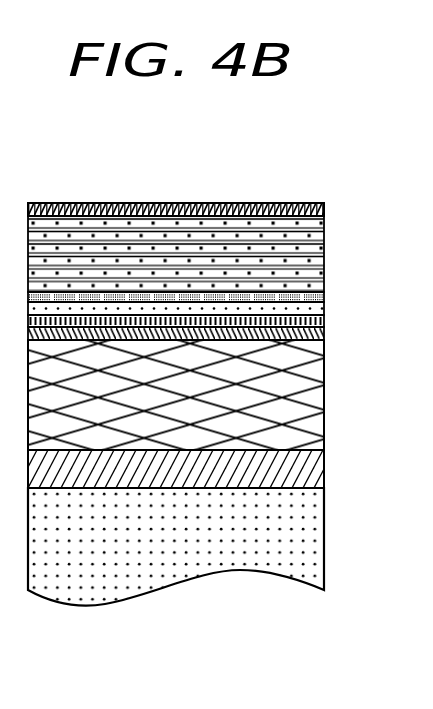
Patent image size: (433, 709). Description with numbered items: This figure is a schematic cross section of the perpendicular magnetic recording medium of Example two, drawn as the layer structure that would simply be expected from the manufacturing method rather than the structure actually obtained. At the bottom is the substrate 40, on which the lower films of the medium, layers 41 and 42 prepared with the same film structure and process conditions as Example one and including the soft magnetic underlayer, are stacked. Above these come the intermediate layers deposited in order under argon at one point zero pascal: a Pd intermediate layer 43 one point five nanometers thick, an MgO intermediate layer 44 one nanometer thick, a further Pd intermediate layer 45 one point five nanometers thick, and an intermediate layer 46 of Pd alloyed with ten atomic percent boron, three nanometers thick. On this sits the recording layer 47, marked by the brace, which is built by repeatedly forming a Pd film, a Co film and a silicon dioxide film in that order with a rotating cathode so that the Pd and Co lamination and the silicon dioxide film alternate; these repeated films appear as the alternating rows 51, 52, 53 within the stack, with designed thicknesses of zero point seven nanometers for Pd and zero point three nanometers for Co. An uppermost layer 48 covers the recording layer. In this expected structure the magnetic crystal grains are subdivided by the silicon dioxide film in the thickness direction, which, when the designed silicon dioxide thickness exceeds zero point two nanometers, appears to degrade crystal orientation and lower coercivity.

The substrate 40 is at (310, 525).
The first layer 41 is at (320, 468).
The second layer 42 is at (310, 427).
The Pd intermediate layer 43 is at (320, 336).
The MgO intermediate layer 44 is at (322, 322).
The Pd intermediate layer 45 is at (322, 307).
The intermediate layer 46 is at (322, 298).
The multilayer stack 47 is at (329, 220).
The top layer 48 is at (325, 205).
The first sublayer 51 is at (280, 237).
The second sublayer 52 is at (232, 228).
The third sublayer 53 is at (188, 231).